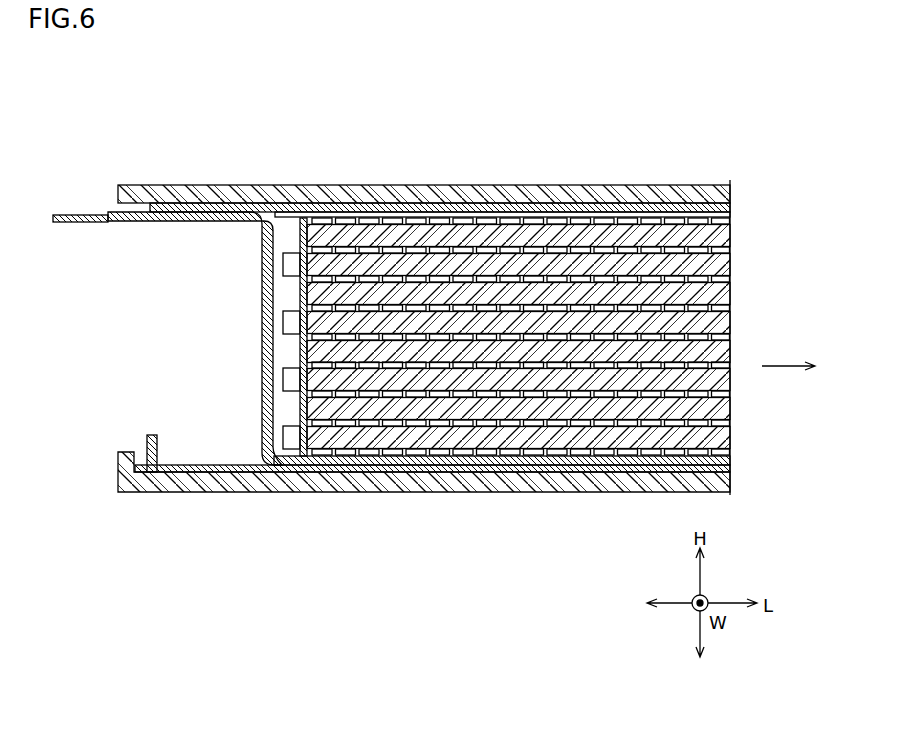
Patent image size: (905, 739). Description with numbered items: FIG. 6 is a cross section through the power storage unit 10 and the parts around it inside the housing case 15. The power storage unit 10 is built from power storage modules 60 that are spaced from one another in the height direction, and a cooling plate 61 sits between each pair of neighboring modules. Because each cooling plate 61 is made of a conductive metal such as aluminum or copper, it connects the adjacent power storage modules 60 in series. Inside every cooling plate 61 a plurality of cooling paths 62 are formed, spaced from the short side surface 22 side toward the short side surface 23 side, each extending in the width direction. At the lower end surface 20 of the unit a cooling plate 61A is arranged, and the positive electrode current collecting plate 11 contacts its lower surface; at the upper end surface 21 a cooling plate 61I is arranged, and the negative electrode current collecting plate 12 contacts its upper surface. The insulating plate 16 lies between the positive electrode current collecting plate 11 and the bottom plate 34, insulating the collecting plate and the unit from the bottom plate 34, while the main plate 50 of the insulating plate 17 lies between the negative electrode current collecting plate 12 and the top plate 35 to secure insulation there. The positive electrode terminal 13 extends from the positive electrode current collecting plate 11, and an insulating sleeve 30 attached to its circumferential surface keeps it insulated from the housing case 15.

The power storage unit 10 is at (350, 101).
The positive electrode current collecting plate 11 is at (527, 466).
The negative electrode current collecting plate 12 is at (510, 213).
The positive electrode terminal 13 is at (85, 223).
The housing case 15 is at (424, 349).
The insulating plate 16 is at (461, 473).
The insulating plate 17 is at (577, 205).
The lower end surface 20 is at (560, 339).
The upper end surface 21 is at (436, 214).
The short side surface 22 is at (288, 356).
The short side surface 23 is at (804, 366).
The insulating sleeve 30 is at (165, 222).
The bottom plate 34 is at (414, 477).
The top plate 35 is at (660, 194).
The main plate 50 is at (440, 164).
The power storage module 60 is at (718, 291).
The cooling plate 61 is at (717, 338).
The cooling plate 61A is at (717, 452).
The cooling plate 61I is at (697, 222).
The cooling path 62 is at (718, 396).